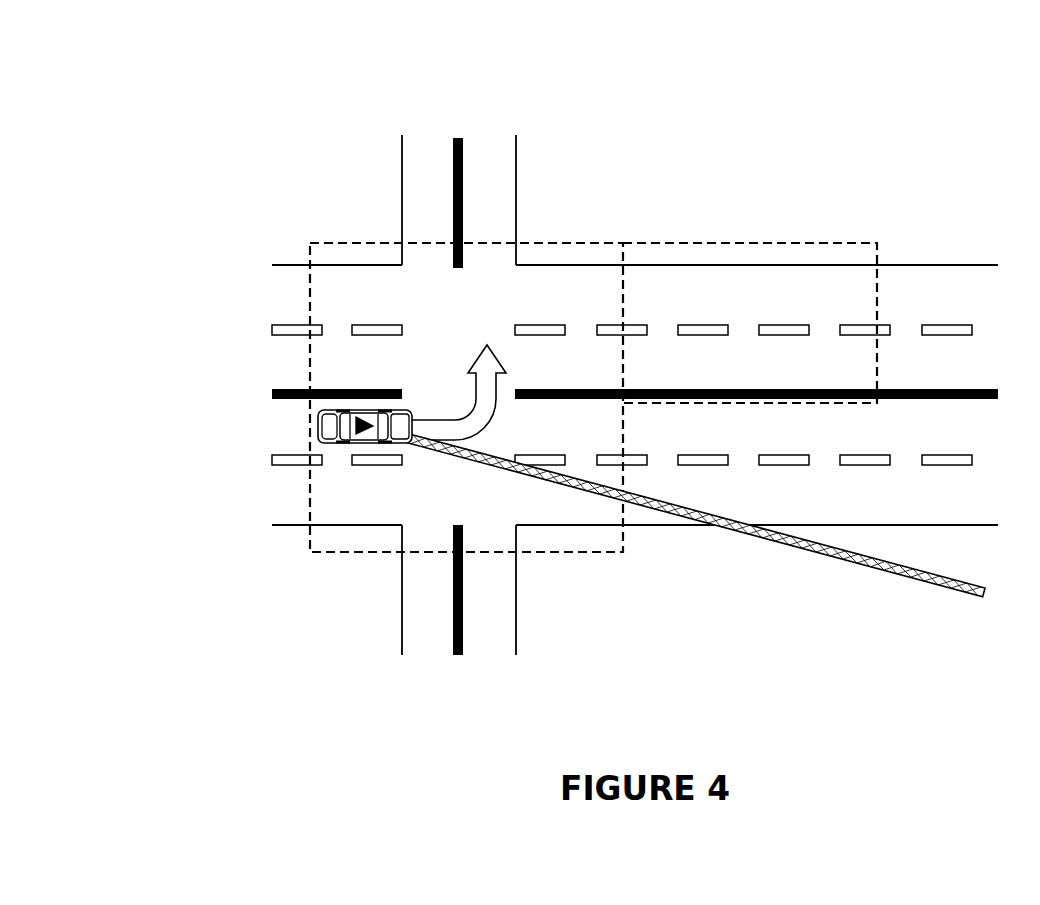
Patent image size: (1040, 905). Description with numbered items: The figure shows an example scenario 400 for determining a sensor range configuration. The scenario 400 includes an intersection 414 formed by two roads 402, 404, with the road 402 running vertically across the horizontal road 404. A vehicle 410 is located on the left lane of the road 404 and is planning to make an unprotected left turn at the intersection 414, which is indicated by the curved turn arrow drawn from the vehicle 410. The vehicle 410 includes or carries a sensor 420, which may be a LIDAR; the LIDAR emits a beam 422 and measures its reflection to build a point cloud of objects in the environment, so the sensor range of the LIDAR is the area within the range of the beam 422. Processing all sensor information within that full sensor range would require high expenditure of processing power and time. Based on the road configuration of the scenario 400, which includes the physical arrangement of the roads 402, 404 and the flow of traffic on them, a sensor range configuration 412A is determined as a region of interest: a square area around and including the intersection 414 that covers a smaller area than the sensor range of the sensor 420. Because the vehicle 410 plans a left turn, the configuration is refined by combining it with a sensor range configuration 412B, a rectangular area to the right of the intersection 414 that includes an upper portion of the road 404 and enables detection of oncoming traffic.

The scenario 400 is at (932, 92).
The road 402 is at (502, 137).
The road 404 is at (272, 355).
The vehicle 410 is at (323, 442).
The sensor range configuration 412A is at (583, 242).
The sensor range configuration 412B is at (753, 242).
The intersection 414 is at (465, 388).
The sensor 420 is at (357, 432).
The beam 422 is at (725, 527).